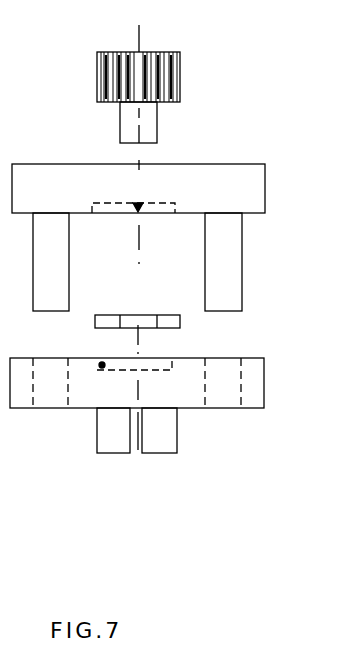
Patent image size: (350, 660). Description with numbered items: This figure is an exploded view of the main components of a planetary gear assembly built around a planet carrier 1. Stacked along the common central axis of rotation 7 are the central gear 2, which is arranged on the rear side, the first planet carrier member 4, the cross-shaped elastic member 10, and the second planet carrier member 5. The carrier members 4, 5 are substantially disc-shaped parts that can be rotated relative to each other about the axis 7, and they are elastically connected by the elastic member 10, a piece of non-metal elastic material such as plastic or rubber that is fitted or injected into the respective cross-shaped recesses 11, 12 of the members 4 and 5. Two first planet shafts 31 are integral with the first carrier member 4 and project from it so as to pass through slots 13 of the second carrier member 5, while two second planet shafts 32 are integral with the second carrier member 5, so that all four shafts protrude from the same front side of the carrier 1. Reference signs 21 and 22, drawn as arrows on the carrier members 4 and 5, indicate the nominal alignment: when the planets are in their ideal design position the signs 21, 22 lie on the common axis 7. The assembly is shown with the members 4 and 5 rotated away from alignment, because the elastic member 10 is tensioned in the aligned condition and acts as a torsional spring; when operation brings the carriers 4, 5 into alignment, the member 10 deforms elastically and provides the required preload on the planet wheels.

The planet carrier 1 is at (288, 263).
The central gear 2 is at (180, 72).
The first planet carrier member 4 is at (240, 172).
The second planet carrier member 5 is at (193, 398).
The central axis of rotation 7 is at (137, 482).
The elastic member 10 is at (137, 316).
The cross-shaped recess 11 is at (165, 213).
The cross-shaped recess 12 is at (163, 362).
The slots 13 is at (241, 382).
The reference sign 21 is at (143, 203).
The reference sign 22 is at (104, 368).
The first planet shafts 31 is at (62, 258).
The second planet shafts 32 is at (150, 453).